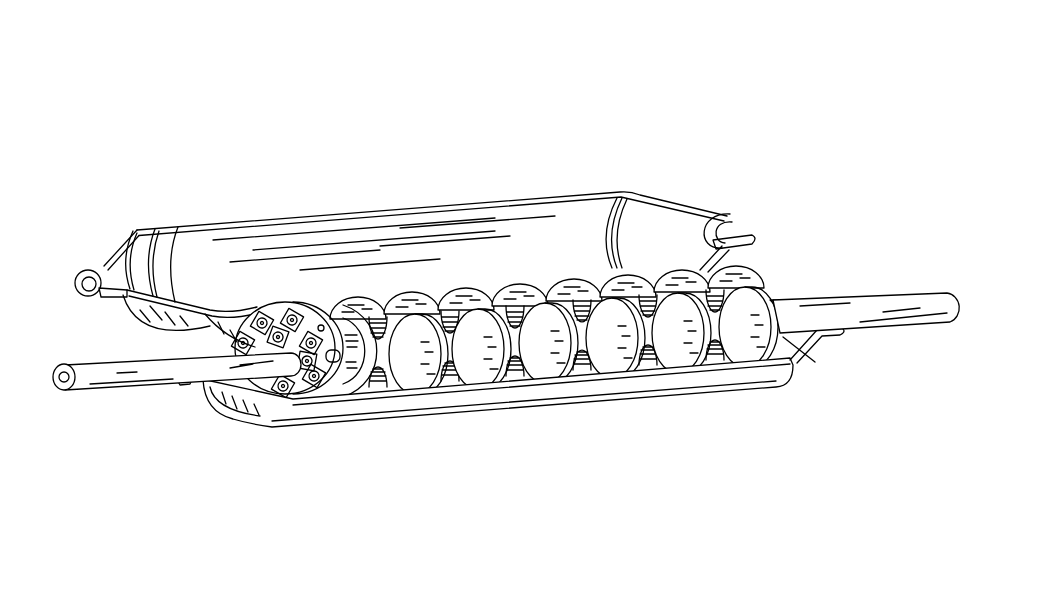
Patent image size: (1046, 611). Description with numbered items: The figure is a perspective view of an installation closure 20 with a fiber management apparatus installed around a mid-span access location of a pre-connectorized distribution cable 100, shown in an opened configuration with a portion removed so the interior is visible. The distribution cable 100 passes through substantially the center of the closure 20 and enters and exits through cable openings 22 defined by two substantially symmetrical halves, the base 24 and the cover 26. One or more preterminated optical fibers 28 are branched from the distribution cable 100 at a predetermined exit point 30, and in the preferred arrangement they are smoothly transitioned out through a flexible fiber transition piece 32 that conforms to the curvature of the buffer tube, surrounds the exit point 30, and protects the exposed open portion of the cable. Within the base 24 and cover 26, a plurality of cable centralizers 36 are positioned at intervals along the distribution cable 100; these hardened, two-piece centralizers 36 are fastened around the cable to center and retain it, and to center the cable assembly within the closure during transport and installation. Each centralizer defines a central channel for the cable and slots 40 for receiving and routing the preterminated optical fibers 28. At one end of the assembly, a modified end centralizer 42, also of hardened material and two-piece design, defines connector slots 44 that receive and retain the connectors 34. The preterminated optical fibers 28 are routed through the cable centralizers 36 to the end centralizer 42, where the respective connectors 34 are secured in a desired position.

The installation closure 20 is at (477, 70).
The cable openings 22 is at (94, 277).
The base 24 is at (587, 403).
The cover 26 is at (208, 222).
The preterminated optical fibers 28 is at (770, 290).
The exit point 30 is at (808, 275).
The flexible fiber transition piece 32 is at (800, 362).
The connectors 34 is at (341, 316).
The cable centralizers 36 is at (680, 355).
The slots 40 is at (636, 300).
The end centralizer 42 is at (283, 300).
The connector slots 44 is at (320, 322).
The distribution cable 100 is at (880, 297).